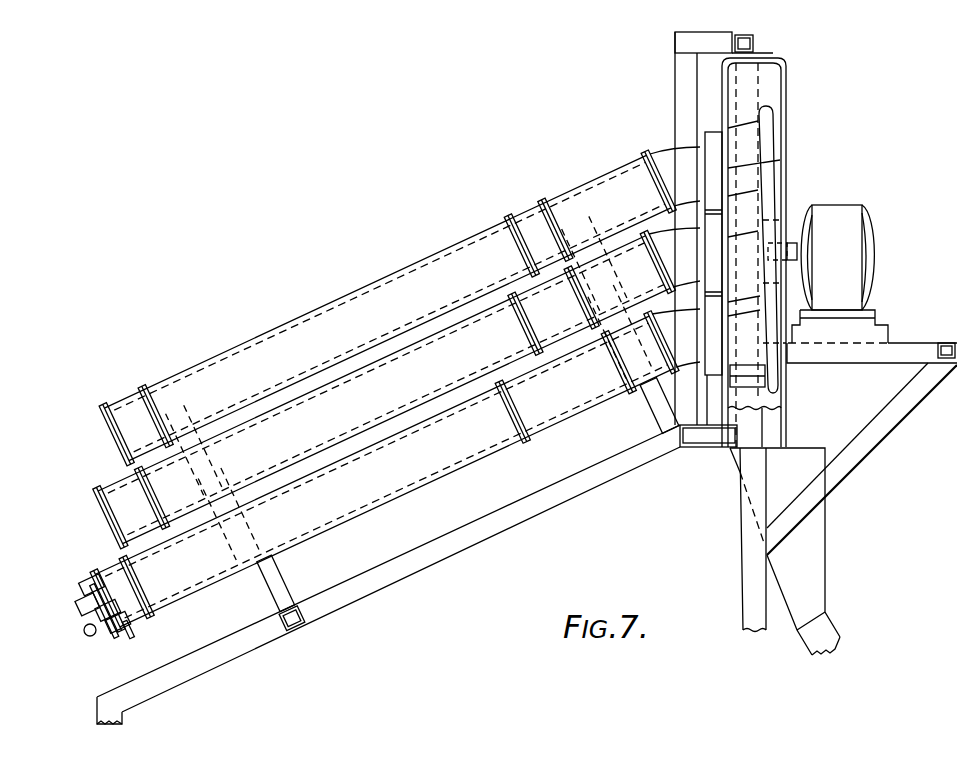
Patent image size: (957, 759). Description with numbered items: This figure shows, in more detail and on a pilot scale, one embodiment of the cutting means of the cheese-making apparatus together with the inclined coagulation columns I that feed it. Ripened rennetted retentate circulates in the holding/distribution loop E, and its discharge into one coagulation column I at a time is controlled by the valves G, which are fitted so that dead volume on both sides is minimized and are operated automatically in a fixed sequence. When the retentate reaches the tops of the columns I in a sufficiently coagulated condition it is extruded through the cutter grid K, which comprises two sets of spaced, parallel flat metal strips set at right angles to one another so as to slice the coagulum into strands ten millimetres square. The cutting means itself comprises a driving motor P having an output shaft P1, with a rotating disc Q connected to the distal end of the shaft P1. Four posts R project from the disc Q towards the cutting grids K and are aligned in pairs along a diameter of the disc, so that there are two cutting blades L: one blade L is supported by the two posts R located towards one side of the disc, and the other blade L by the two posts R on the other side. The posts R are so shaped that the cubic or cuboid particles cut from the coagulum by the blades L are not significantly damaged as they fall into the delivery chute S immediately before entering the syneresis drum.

The coagulation column I is at (340, 322).
The cutter grid K is at (712, 143).
The post R is at (748, 125).
The cutting blade L is at (728, 163).
The rotating disc Q is at (768, 188).
The driving motor P is at (842, 240).
The output shaft P1 is at (795, 252).
The delivery chute S is at (805, 578).
The valve G is at (97, 623).
The holding/distribution loop E is at (85, 636).